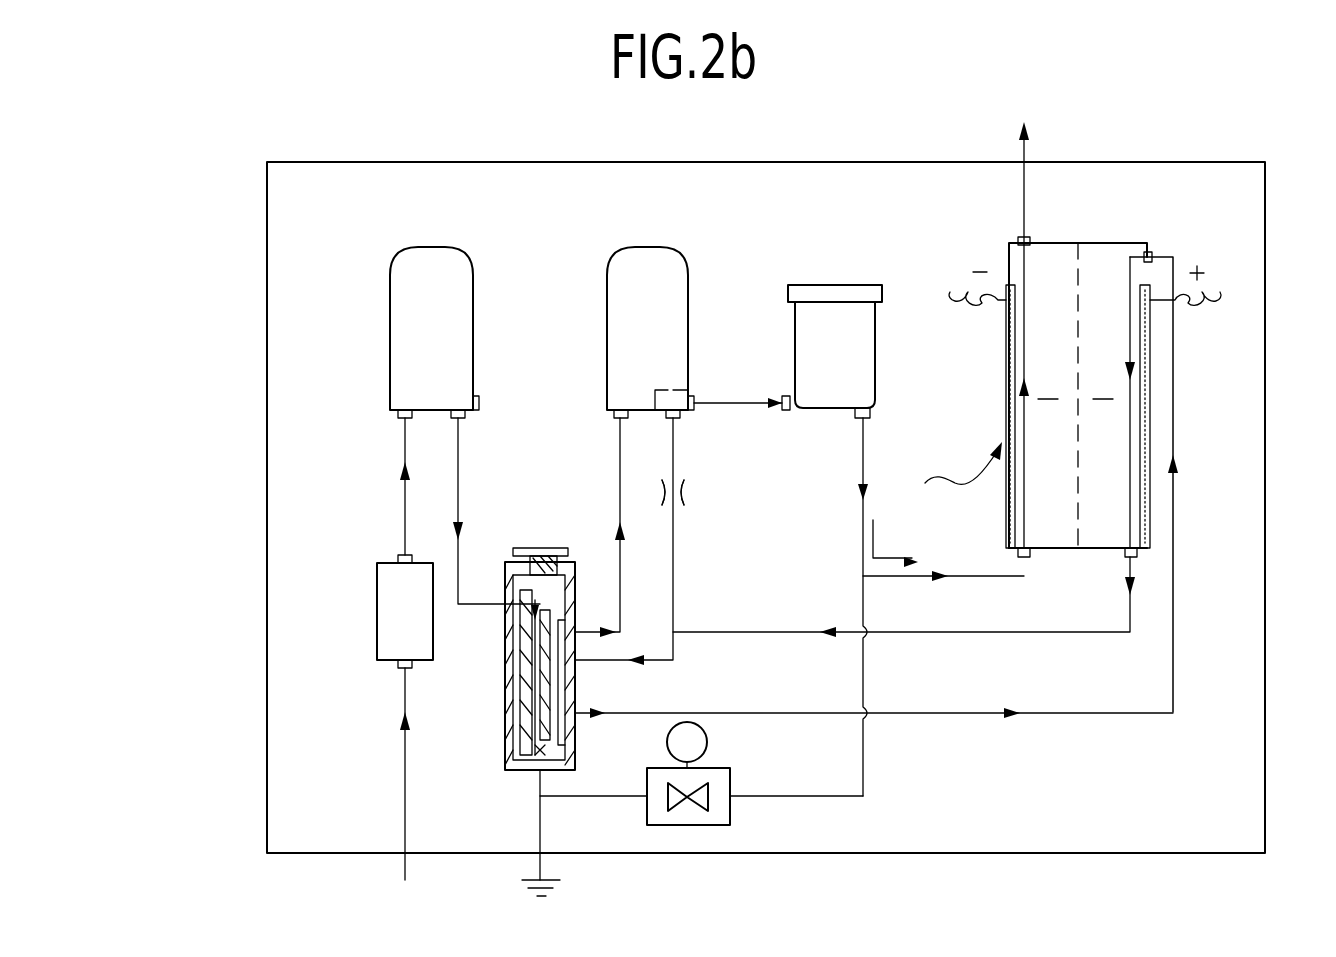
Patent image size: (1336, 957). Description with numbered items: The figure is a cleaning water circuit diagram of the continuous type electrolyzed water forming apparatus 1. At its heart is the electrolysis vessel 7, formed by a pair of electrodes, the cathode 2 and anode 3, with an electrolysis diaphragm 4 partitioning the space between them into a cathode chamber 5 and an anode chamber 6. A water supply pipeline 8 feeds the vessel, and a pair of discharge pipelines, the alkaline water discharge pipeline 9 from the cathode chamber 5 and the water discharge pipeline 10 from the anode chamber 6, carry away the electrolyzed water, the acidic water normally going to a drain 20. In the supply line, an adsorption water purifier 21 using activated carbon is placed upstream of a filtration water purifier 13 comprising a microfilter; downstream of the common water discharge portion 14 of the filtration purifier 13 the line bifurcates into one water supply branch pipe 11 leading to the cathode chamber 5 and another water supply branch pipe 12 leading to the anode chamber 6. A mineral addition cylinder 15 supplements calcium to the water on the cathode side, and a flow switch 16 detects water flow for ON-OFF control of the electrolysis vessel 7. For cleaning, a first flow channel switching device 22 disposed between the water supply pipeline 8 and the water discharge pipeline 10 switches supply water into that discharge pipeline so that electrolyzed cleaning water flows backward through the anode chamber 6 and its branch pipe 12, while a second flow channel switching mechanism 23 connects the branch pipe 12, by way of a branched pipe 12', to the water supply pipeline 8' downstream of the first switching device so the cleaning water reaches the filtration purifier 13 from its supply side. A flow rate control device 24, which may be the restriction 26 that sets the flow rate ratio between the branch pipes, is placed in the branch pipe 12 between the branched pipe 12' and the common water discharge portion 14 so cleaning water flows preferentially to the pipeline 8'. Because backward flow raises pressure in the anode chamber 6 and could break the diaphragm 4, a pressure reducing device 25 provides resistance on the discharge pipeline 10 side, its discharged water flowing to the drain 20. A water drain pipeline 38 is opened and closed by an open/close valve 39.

The continuous type electrolyzed water forming apparatus 1 is at (245, 318).
The cathode 2 is at (1006, 374).
The anode 3 is at (1150, 345).
The electrolysis diaphragm 4 is at (1078, 522).
The cathode chamber 5 is at (1078, 400).
The anode chamber 6 is at (1135, 484).
The electrolysis vessel 7 is at (937, 504).
The water supply pipeline 8 is at (431, 649).
The water supply pipeline downstream of the first flow channel switching mechanism 8' is at (587, 527).
The alkaline water discharge pipeline 9 is at (1024, 196).
The water discharge pipeline 10 is at (1173, 508).
The water supply branch pipe 11 is at (755, 405).
The water supply branch pipe 12 is at (707, 560).
The branched pipe 12' is at (697, 667).
The filtration water purifier 13 is at (607, 326).
The common water discharge portion 14 is at (655, 393).
The mineral addition cylinder 15 is at (838, 312).
The flow switch 16 is at (377, 636).
The drain 20 is at (552, 893).
The adsorption water purifier 21 is at (390, 325).
The first flow channel switching device 22 is at (540, 668).
The second flow channel switching mechanism 23 is at (575, 597).
The flow rate control device 24 is at (686, 490).
The restriction 26 is at (673, 492).
The pressure reducing device 25 is at (532, 750).
The water drain pipeline 38 is at (865, 675).
The open/close valve 39 is at (730, 773).